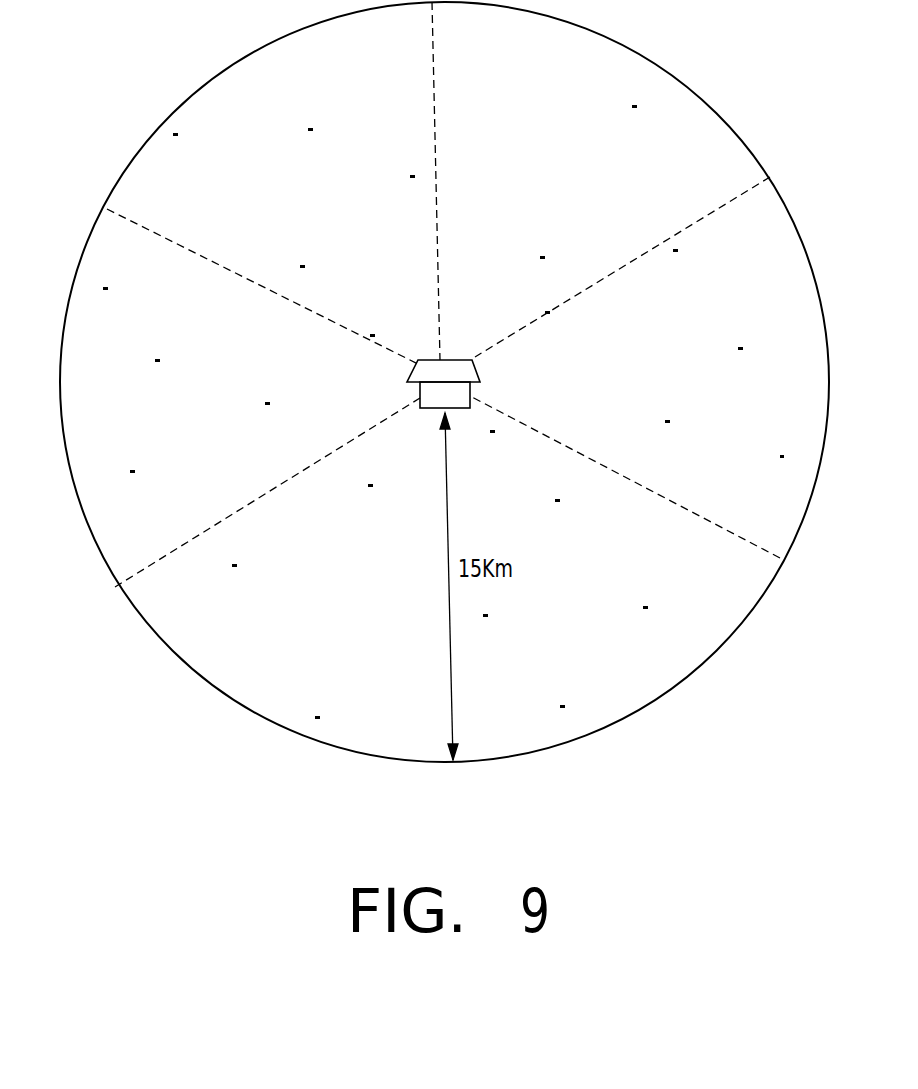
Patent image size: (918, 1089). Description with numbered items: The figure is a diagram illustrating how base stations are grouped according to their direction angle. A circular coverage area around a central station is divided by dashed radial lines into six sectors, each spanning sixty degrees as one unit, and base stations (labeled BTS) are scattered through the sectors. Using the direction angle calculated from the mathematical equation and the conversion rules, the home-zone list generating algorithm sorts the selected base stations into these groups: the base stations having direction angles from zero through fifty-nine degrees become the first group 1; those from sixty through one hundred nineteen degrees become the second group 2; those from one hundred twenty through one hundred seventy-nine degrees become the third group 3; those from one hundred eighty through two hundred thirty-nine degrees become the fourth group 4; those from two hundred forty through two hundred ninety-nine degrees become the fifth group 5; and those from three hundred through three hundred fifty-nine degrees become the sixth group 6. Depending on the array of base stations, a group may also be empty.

The first group 1 is at (261, 722).
The second group 2 is at (60, 392).
The third group 3 is at (228, 68).
The fourth group 4 is at (662, 62).
The fifth group 5 is at (829, 358).
The sixth group 6 is at (648, 703).